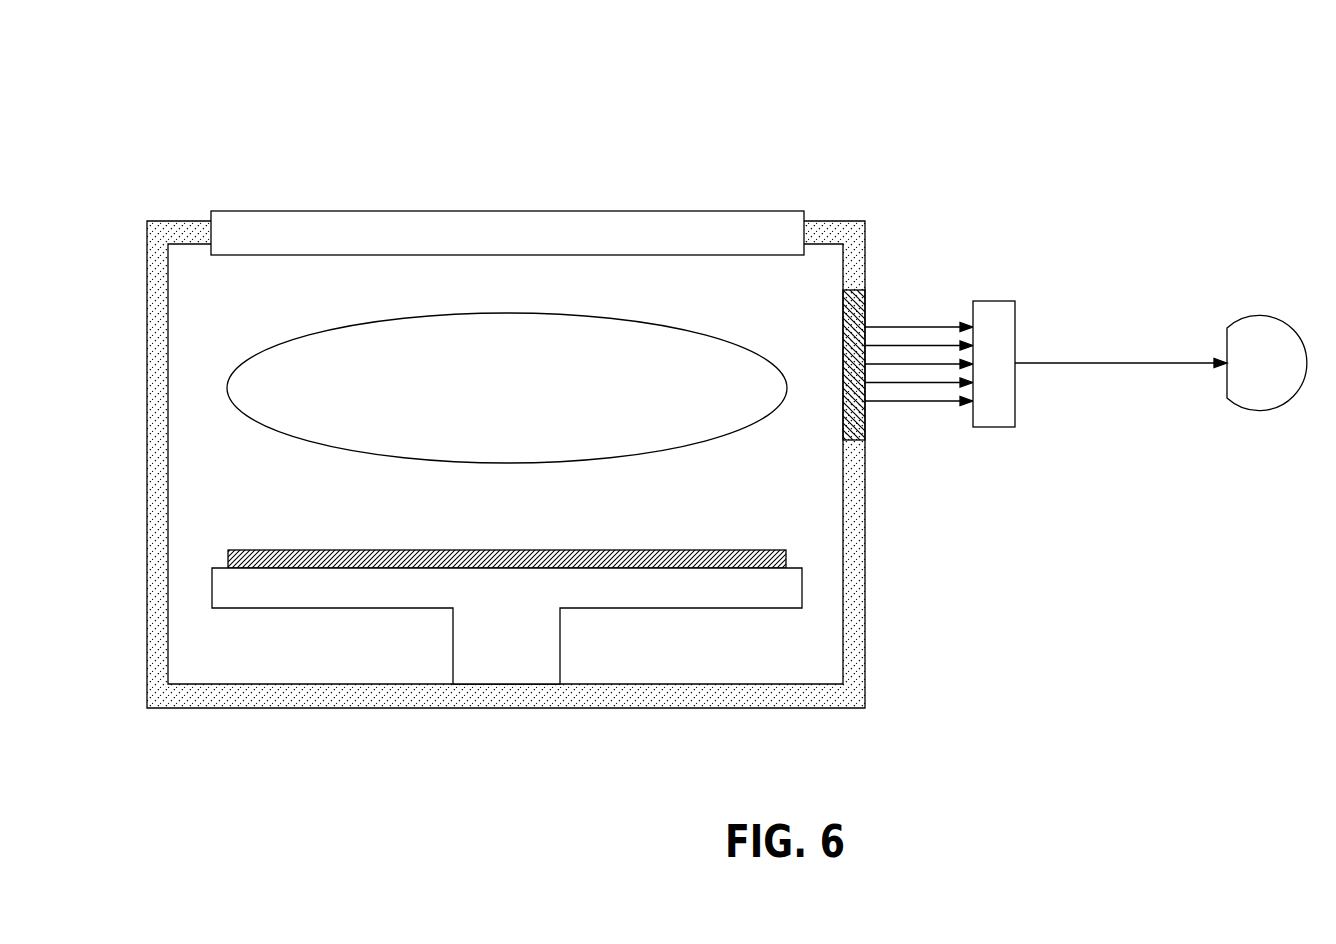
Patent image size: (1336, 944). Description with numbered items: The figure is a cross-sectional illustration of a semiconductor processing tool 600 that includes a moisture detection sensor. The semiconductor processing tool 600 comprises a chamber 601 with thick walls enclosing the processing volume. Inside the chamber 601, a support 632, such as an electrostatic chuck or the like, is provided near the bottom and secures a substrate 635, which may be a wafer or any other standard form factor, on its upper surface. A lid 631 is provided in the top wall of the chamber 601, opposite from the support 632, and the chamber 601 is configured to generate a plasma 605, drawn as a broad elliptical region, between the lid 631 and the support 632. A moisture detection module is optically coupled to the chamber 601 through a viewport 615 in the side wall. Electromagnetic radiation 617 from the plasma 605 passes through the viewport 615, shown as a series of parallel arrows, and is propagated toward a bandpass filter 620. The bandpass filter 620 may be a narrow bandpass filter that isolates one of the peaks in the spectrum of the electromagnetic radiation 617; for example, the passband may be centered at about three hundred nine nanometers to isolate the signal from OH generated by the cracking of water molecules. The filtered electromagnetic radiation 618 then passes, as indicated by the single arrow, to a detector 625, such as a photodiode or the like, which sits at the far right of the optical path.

The semiconductor processing tool 600 is at (1120, 78).
The chamber 601 is at (835, 232).
The lid 631 is at (565, 225).
The viewport 615 is at (865, 422).
The plasma 605 is at (688, 426).
The substrate 635 is at (477, 558).
The support 632 is at (657, 597).
The electromagnetic radiation 617 is at (893, 327).
The bandpass filter 620 is at (993, 313).
The filtered electromagnetic radiation 618 is at (1065, 363).
The detector 625 is at (1258, 333).